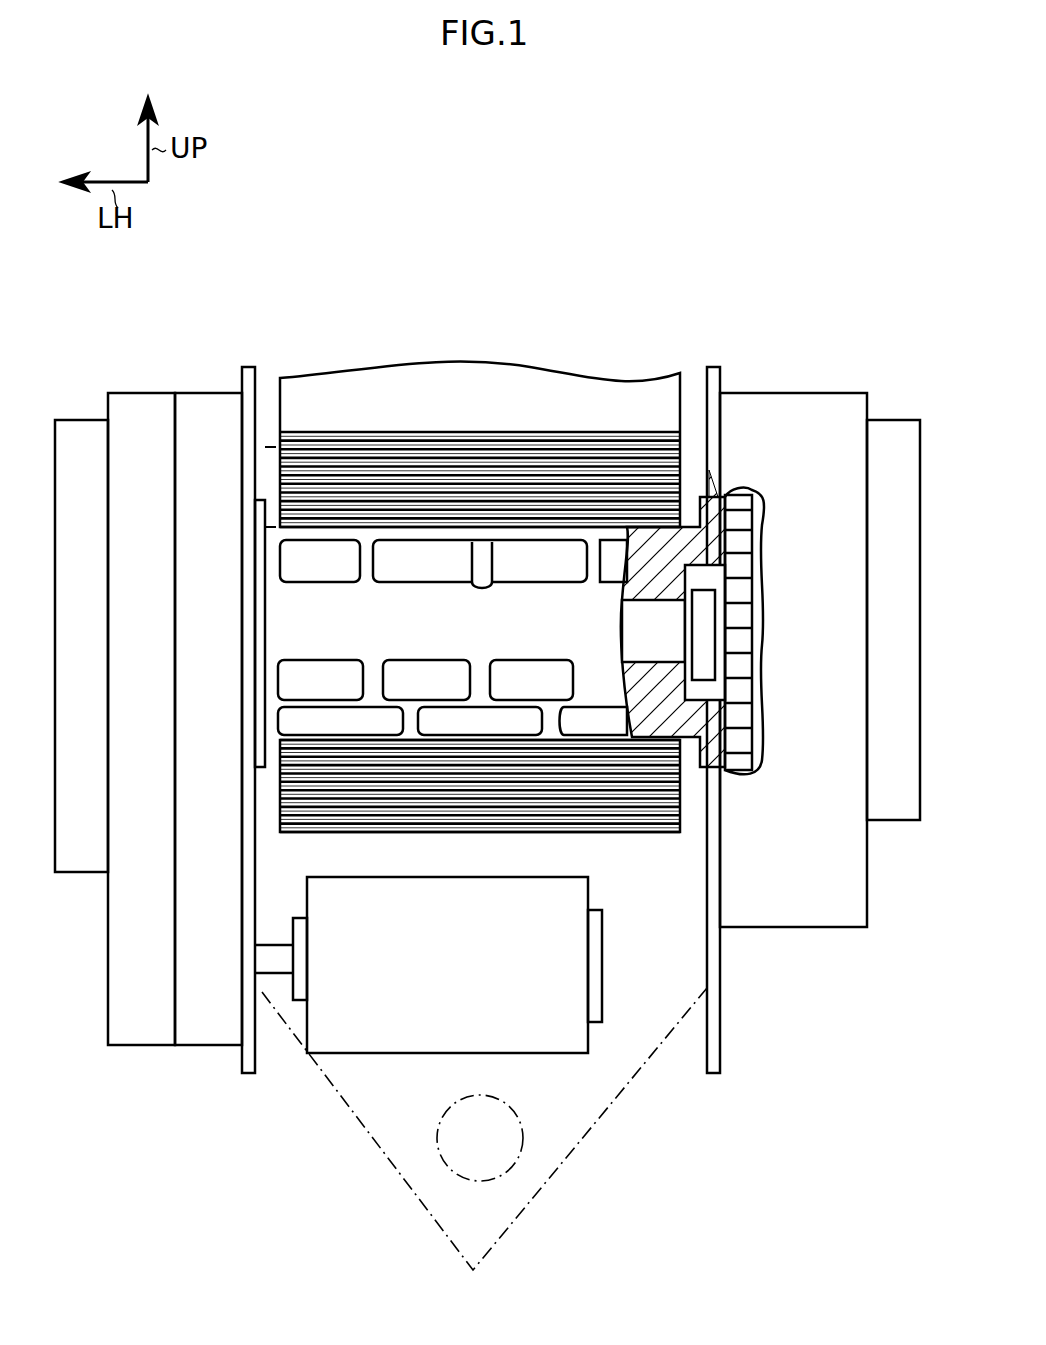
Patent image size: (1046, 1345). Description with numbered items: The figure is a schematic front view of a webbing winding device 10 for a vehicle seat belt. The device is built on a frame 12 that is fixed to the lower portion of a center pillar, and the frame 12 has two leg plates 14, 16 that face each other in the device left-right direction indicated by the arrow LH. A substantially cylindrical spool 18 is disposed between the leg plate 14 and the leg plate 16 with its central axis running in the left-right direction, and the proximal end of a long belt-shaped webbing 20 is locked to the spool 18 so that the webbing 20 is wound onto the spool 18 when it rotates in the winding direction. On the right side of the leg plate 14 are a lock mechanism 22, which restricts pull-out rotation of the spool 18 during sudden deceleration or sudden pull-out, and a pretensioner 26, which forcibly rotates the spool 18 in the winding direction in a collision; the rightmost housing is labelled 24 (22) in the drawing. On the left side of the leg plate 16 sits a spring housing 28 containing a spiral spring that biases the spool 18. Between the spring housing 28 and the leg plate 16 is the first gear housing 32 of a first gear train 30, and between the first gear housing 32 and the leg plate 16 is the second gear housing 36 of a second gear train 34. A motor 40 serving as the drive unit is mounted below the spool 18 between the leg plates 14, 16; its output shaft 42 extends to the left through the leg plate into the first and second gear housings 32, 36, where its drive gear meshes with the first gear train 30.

The webbing winding device 10 is at (700, 246).
The frame 12 is at (721, 1050).
The leg plate 14 is at (722, 1003).
The leg plate 16 is at (262, 1053).
The spool 18 is at (480, 545).
The webbing 20 is at (562, 380).
The lock mechanism 22 is at (908, 578).
The gear case 24 is at (895, 420).
The pretensioner 26 is at (800, 393).
The spring housing 28 is at (78, 872).
The first gear train 30 is at (124, 672).
The first gear housing 32 is at (143, 392).
The second gear train 34 is at (218, 676).
The second gear housing 36 is at (210, 392).
The motor 40 is at (553, 1053).
The output shaft 42 is at (276, 945).